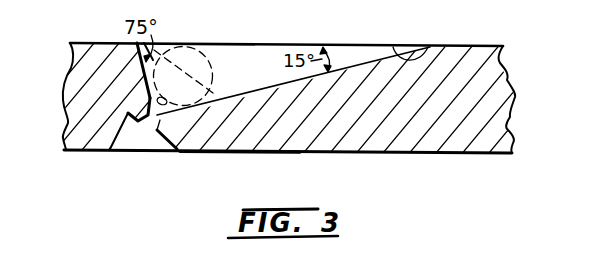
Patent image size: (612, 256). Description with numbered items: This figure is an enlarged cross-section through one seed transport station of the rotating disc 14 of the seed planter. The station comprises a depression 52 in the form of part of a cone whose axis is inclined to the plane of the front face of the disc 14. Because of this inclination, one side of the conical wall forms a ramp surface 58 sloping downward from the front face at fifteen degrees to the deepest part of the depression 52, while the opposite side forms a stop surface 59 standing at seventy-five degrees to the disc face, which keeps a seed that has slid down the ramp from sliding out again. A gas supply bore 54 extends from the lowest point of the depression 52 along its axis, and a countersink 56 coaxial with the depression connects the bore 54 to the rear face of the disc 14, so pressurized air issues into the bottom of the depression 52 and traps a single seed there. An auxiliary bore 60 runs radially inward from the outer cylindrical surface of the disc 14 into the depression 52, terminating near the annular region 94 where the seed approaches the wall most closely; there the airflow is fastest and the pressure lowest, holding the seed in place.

The disc 14 is at (490, 132).
The depression 52 is at (197, 72).
The bore 54 is at (178, 138).
The countersink 56 is at (137, 137).
The ramp surface 58 is at (430, 46).
The clamping wall 59 is at (141, 74).
The bore 60 is at (131, 85).
The annular region 94 is at (242, 151).